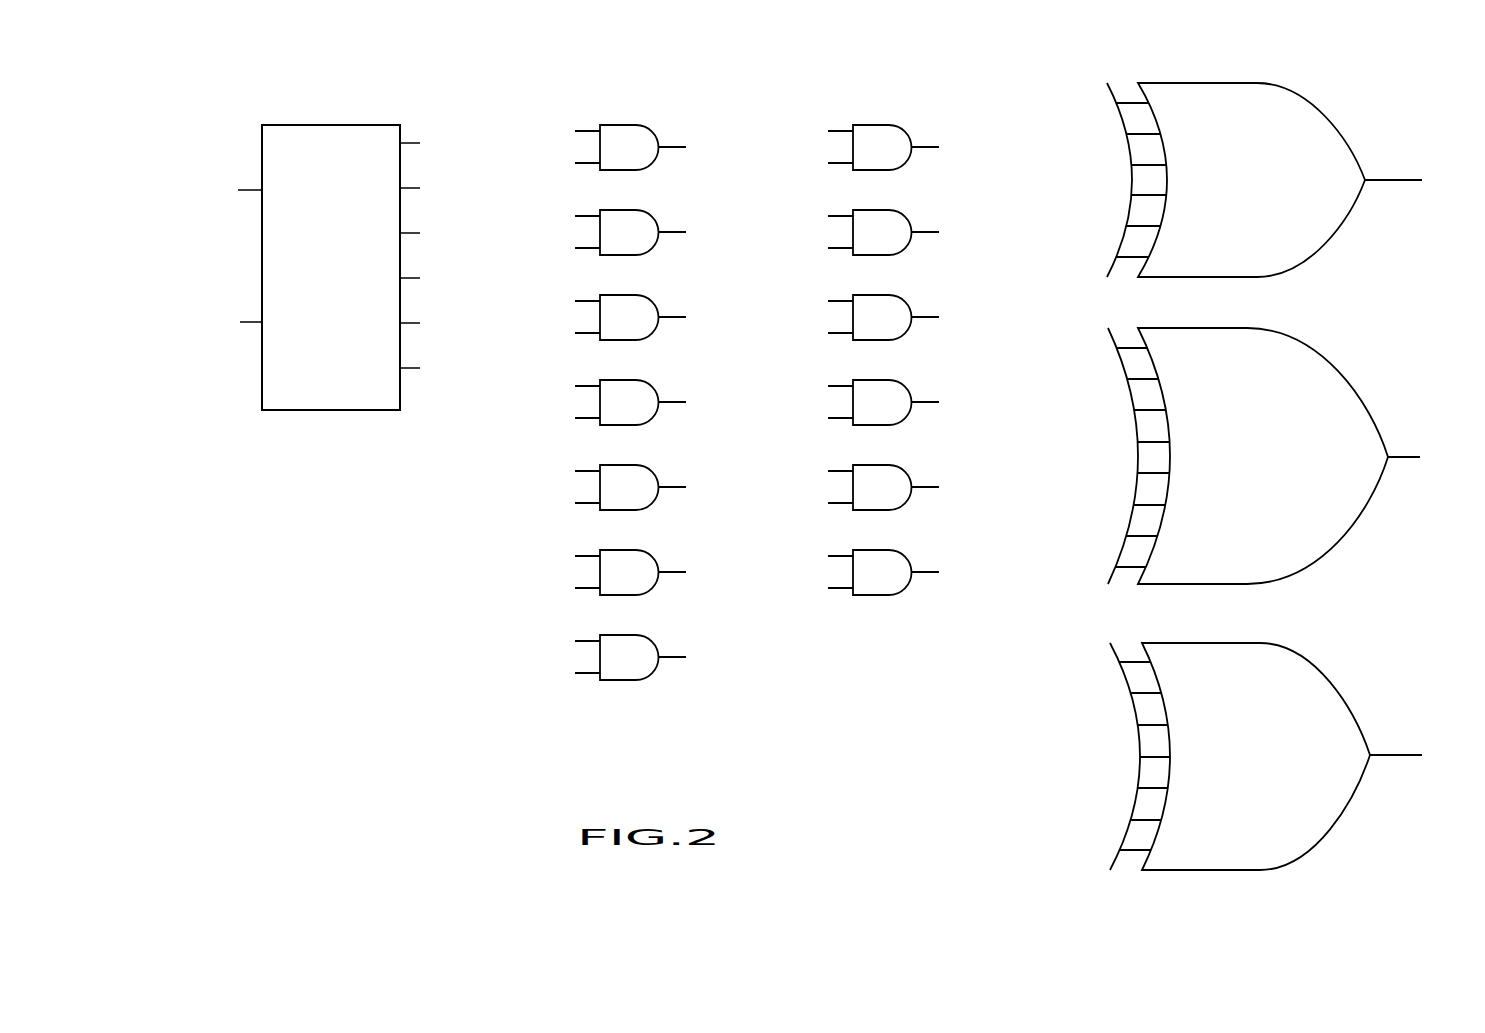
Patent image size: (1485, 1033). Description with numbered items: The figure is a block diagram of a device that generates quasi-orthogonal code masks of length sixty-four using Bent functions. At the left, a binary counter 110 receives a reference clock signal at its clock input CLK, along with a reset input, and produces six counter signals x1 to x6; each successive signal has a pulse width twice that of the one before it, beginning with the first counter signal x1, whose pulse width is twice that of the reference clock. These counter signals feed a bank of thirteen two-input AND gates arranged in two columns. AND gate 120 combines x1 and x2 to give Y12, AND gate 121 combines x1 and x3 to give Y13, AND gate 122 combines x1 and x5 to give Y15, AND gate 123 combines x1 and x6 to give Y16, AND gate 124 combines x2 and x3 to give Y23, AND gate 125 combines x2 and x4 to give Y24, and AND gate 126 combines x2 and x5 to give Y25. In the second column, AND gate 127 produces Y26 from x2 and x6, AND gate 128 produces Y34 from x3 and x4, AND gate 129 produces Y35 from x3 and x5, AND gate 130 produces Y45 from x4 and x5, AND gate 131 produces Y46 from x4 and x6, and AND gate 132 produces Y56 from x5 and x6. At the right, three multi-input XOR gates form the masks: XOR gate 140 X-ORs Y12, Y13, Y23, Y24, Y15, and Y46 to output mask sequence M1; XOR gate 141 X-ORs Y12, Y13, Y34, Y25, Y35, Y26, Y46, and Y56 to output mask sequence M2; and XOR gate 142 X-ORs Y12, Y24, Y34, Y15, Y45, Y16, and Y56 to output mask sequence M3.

The binary counter 110 is at (335, 125).
The AND gate 120 is at (653, 129).
The AND gate 121 is at (653, 214).
The AND gate 122 is at (653, 299).
The AND gate 123 is at (653, 384).
The AND gate 124 is at (653, 469).
The AND gate 125 is at (653, 554).
The AND gate 126 is at (653, 639).
The AND gate 127 is at (906, 129).
The AND gate 128 is at (906, 214).
The AND gate 129 is at (906, 299).
The AND gate 130 is at (906, 384).
The AND gate 131 is at (906, 469).
The AND gate 132 is at (906, 554).
The XOR gate 140 is at (1326, 113).
The XOR gate 141 is at (1338, 368).
The XOR gate 142 is at (1327, 673).